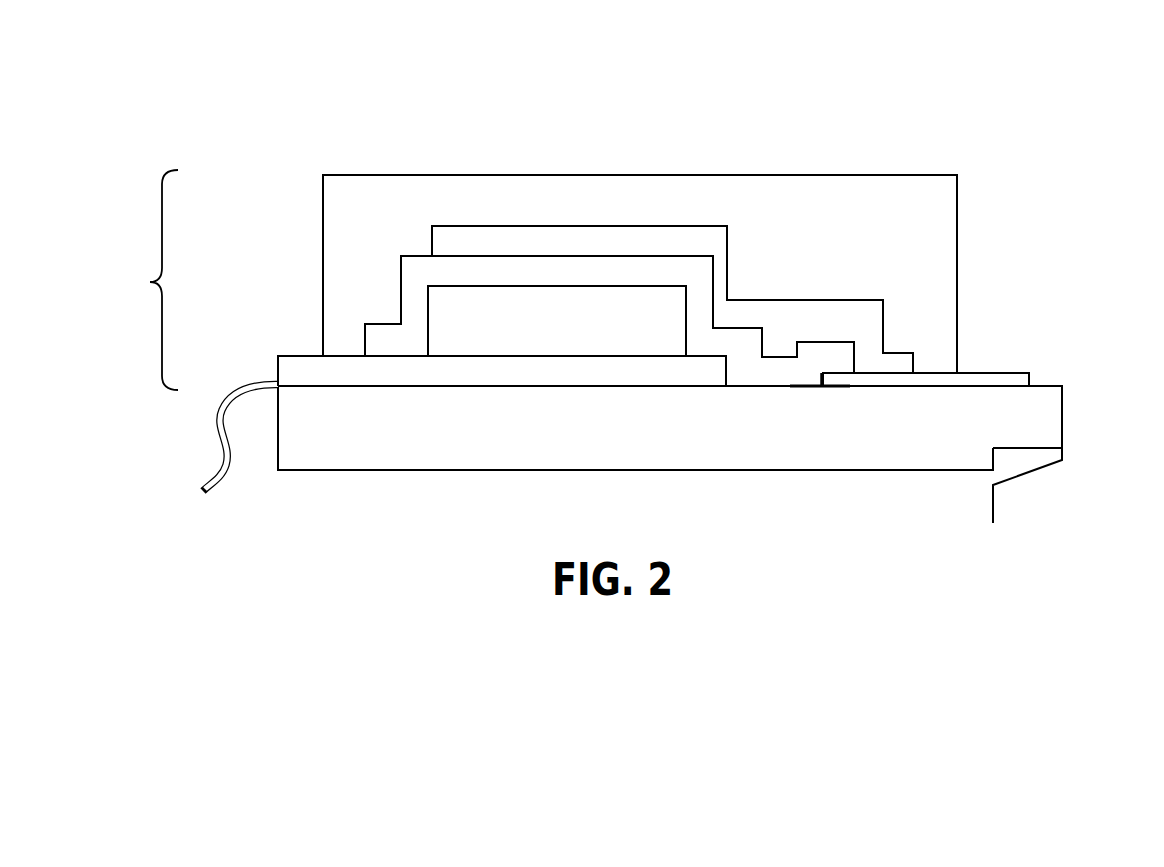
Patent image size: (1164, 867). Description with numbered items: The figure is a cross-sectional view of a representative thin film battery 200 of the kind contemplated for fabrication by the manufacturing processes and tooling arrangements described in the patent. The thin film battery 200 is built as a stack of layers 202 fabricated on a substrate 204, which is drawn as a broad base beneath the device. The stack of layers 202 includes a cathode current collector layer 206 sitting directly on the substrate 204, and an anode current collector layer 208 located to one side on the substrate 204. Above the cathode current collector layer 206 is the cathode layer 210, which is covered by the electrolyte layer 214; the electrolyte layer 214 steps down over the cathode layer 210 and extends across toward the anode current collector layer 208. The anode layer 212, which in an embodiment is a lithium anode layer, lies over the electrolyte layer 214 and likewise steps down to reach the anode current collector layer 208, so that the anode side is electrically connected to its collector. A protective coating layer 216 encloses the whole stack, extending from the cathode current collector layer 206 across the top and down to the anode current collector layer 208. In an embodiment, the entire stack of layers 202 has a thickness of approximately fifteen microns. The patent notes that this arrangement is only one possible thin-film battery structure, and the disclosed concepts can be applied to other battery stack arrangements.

The thin film battery 200 is at (921, 71).
The stack of layers 202 is at (150, 282).
The substrate 204 is at (845, 471).
The cathode current collector layer 206 is at (278, 363).
The anode current collector layer 208 is at (990, 373).
The cathode layer 210 is at (427, 305).
The anode layer 212 is at (883, 312).
The electrolyte layer 214 is at (401, 261).
The protective coating layer 216 is at (957, 200).